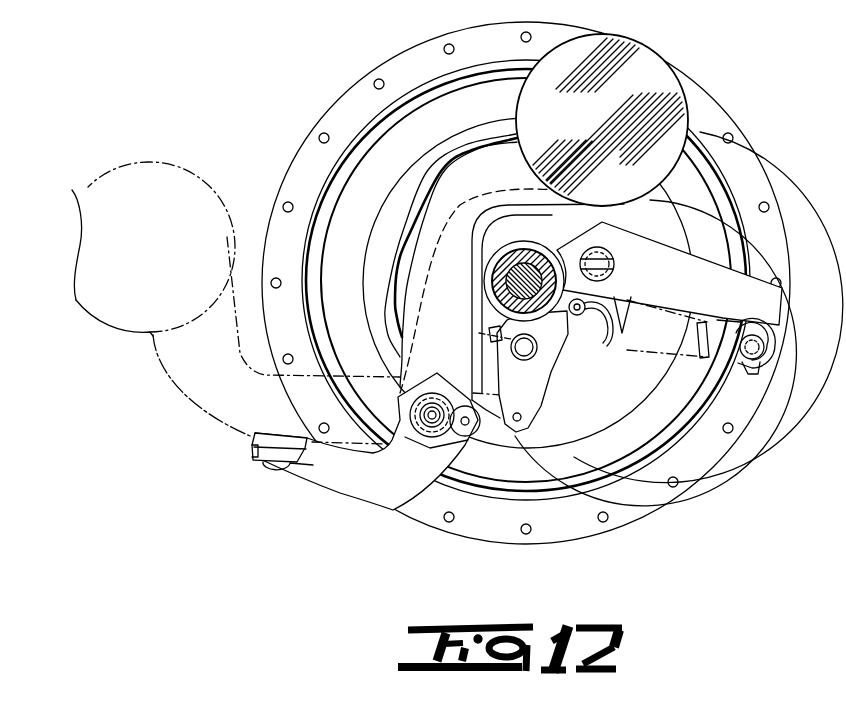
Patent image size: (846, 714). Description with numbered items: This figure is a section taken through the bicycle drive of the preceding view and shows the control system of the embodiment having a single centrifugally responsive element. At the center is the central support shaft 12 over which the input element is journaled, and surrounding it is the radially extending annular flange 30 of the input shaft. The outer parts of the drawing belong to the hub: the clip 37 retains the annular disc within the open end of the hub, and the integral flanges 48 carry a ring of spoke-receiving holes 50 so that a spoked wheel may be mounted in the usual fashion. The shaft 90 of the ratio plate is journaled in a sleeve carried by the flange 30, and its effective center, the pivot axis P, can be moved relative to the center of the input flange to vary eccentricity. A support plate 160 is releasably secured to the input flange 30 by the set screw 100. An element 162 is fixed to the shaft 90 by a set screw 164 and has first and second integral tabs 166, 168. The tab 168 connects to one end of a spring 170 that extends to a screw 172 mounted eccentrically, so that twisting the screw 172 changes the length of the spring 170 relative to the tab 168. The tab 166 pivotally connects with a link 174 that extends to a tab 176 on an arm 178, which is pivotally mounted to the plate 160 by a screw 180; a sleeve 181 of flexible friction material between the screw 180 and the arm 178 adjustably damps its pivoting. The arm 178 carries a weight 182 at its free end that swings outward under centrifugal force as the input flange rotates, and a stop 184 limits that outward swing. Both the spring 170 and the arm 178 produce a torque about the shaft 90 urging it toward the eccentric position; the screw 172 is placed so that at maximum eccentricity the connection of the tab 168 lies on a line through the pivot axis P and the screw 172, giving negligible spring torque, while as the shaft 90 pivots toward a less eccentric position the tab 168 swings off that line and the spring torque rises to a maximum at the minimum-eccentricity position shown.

The central support shaft 12 is at (507, 268).
The annular flange 30 is at (528, 241).
The clip 37 is at (456, 93).
The flanges 48 is at (422, 45).
The spoke-receiving holes 50 is at (373, 81).
The shaft 90 is at (519, 342).
The set screw 100 is at (614, 265).
The support plate 160 is at (707, 257).
The element 162 is at (587, 388).
The set screw 164 is at (489, 334).
The first tab 166 is at (541, 401).
The second tab 168 is at (581, 326).
The spring 170 is at (712, 352).
The screw 172 is at (770, 366).
The link 174 is at (507, 432).
The tab 176 is at (460, 442).
The arm 178 is at (403, 366).
The screw 180 is at (442, 448).
The sleeve 181 is at (420, 392).
The weight 182 is at (633, 42).
The stop 184 is at (254, 452).
The pivot axis P is at (524, 351).